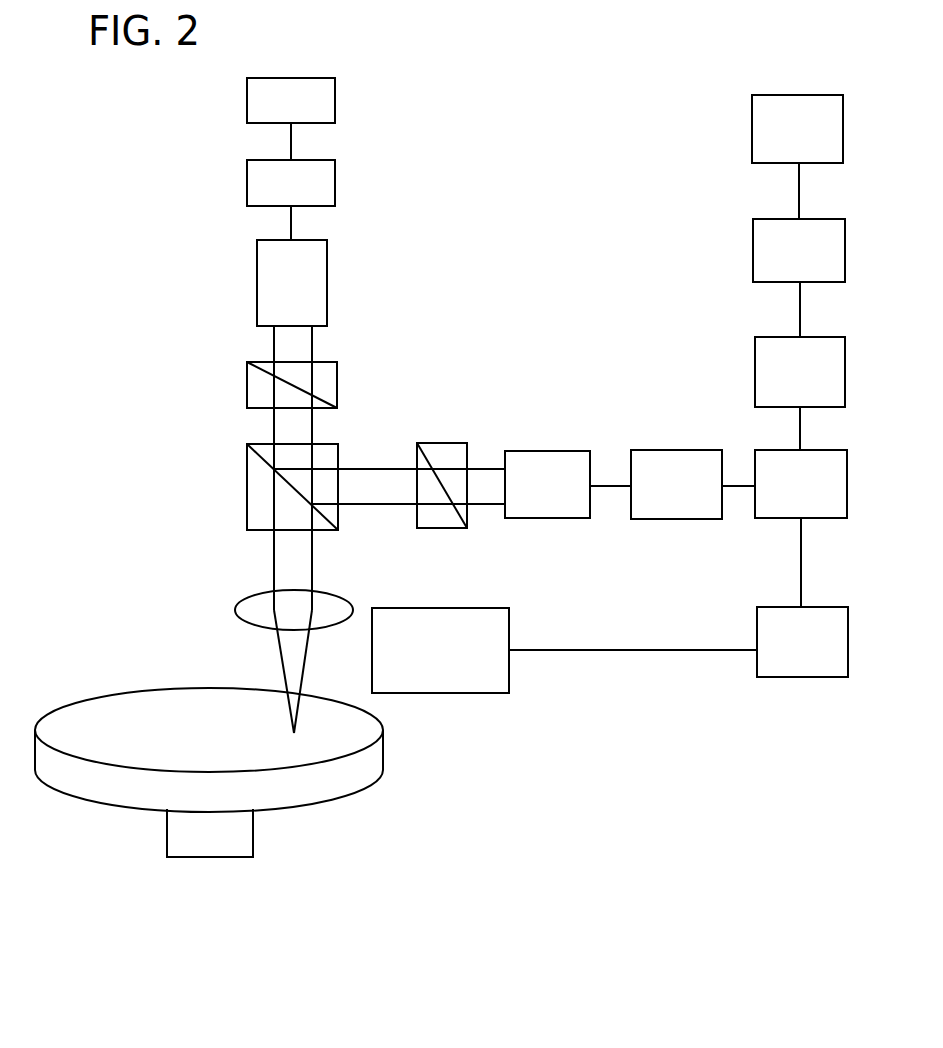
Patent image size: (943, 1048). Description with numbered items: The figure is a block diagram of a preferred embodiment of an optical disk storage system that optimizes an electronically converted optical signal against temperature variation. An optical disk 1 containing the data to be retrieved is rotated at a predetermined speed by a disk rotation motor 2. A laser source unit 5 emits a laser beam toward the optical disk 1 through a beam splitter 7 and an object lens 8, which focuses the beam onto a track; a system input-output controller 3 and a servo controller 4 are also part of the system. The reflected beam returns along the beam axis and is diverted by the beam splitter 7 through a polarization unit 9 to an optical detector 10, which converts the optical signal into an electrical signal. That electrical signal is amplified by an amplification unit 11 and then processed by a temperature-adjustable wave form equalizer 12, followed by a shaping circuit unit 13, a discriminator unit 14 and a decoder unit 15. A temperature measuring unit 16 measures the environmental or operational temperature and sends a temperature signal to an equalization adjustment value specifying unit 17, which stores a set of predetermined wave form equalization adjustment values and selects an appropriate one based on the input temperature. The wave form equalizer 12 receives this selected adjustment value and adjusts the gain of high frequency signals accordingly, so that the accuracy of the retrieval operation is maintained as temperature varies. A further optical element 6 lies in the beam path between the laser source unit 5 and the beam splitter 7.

The optical disk 1 is at (340, 738).
The disk rotation motor 2 is at (220, 838).
The system input-output controller 3 is at (291, 100).
The servo controller 4 is at (291, 183).
The laser source unit 5 is at (292, 283).
The beam splitter 6 is at (258, 383).
The beam splitter 7 is at (260, 512).
The object lens 8 is at (256, 608).
The polarization unit 9 is at (433, 450).
The optical detector 10 is at (547, 484).
The amplification unit 11 is at (676, 484).
The wave form equalizer 12 is at (801, 484).
The shaping circuit unit 13 is at (800, 372).
The discriminator unit 14 is at (799, 250).
The decoder unit 15 is at (797, 129).
The temperature measuring unit 16 is at (440, 650).
The equalization adjustment value specifying unit 17 is at (802, 642).